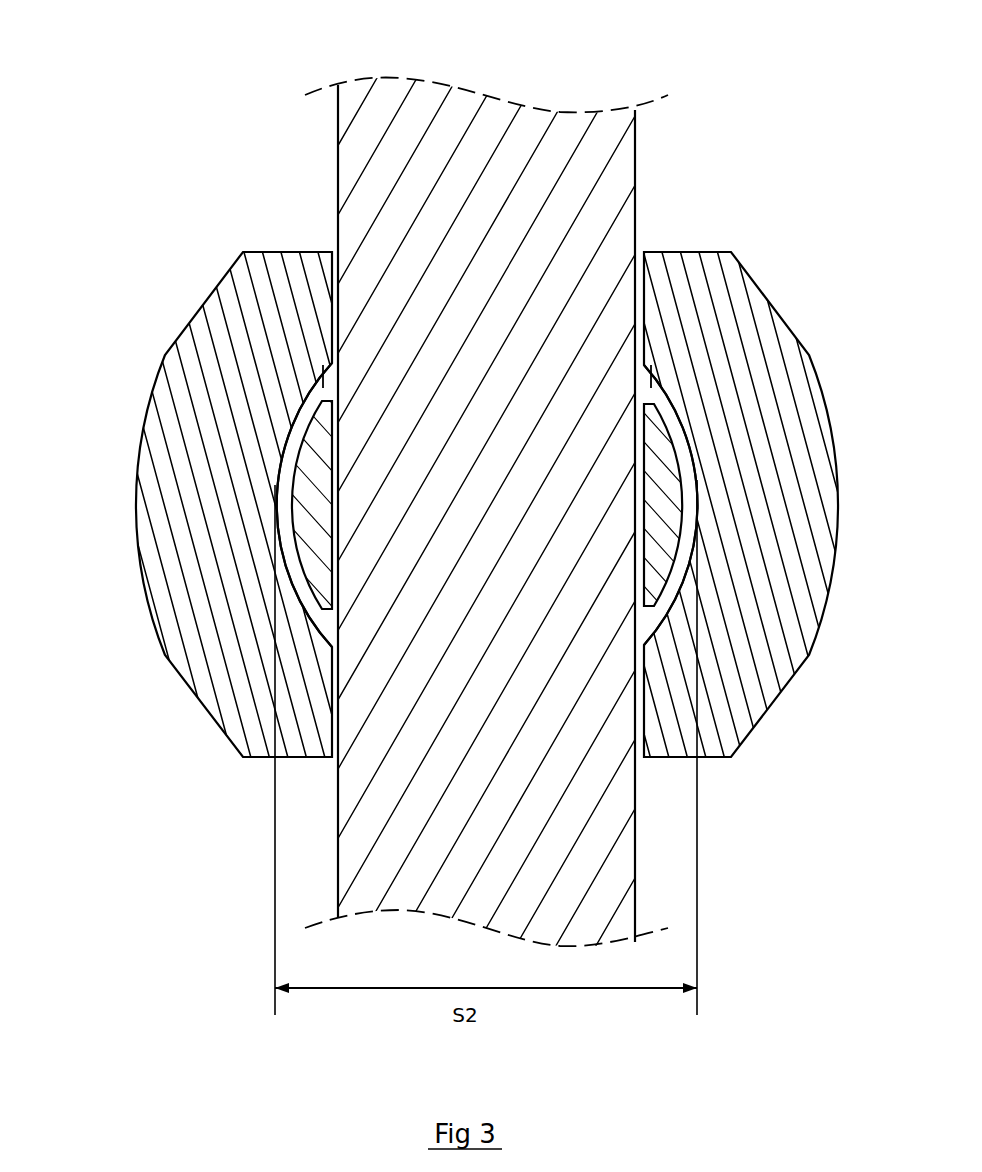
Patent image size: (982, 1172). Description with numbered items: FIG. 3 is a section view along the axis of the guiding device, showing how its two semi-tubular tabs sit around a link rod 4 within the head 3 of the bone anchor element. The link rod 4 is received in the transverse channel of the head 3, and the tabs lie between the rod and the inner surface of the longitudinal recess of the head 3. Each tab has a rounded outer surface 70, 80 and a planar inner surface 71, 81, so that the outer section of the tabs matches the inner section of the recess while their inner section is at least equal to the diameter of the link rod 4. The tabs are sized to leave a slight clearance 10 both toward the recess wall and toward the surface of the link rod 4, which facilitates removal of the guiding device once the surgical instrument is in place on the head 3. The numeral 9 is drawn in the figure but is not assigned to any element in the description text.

The seal 3 is at (800, 318).
The shaft 4 is at (540, 105).
The sealing lip 9 is at (327, 370).
The annular gap 10 is at (332, 550).
The lip contact portion 70 is at (298, 552).
The lip contact portion 71 is at (330, 579).
The lip contact portion 80 is at (678, 475).
The lip contact portion 81 is at (648, 532).